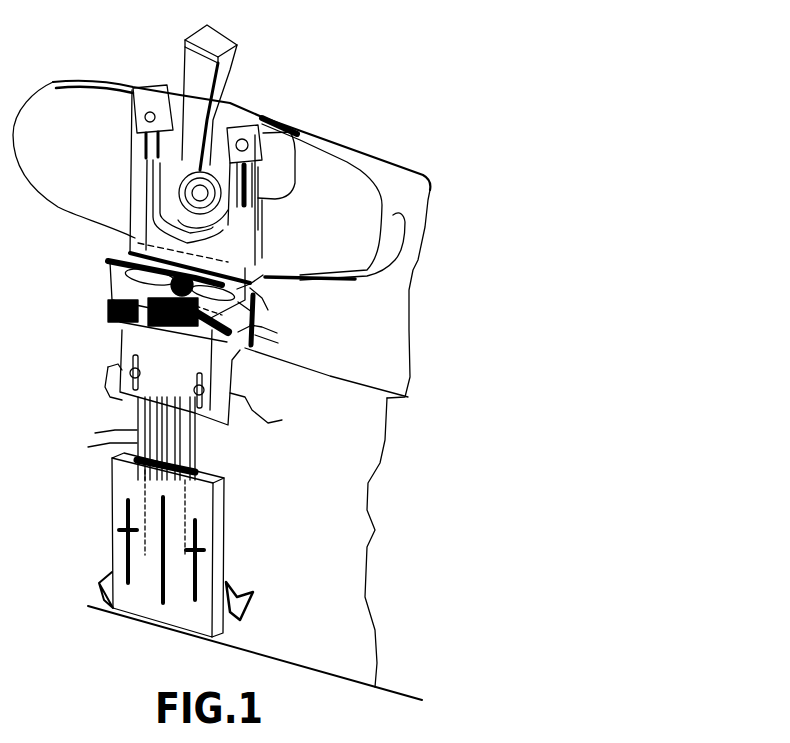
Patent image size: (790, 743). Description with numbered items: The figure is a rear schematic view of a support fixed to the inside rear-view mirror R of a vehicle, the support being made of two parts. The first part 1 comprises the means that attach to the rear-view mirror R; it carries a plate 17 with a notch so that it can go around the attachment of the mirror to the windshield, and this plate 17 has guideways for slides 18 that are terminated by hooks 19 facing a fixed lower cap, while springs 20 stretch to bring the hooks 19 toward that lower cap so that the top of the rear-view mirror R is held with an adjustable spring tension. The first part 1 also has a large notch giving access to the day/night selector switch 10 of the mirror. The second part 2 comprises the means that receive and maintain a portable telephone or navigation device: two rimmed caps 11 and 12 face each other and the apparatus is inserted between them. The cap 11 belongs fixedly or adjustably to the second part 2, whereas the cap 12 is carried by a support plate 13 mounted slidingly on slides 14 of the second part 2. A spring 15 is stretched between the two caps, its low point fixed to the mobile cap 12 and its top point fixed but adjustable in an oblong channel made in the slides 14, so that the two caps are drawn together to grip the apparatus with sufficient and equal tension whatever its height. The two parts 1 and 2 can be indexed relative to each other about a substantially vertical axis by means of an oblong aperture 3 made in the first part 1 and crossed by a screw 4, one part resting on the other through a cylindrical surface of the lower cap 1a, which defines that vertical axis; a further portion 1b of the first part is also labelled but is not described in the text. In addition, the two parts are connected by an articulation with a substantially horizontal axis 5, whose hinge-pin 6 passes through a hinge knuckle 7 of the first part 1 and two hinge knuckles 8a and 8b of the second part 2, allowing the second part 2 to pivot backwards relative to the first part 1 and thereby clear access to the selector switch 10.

The rear-view mirror R is at (393, 215).
The first part 1 is at (340, 294).
The lower cap 1a is at (270, 290).
The frame slot portion 1b is at (277, 333).
The second part 2 is at (255, 549).
The oblong aperture 3 is at (120, 262).
The screw 4 is at (125, 280).
The substantially horizontal axis 5 is at (252, 360).
The hinge-pin 6 is at (278, 343).
The hinge knuckle 7 is at (135, 345).
The hinge knuckle 8a is at (130, 314).
The hinge knuckle 8b is at (178, 372).
The day/night selector switch 10 is at (138, 243).
The cap 11 is at (263, 417).
The cap 12 is at (240, 590).
The support plate 13 is at (225, 502).
The slides 14 is at (197, 452).
The spring 15 is at (95, 433).
The plate 17 is at (260, 210).
The slides 18 is at (137, 150).
The hooks 19 is at (171, 88).
The springs 20 is at (132, 160).